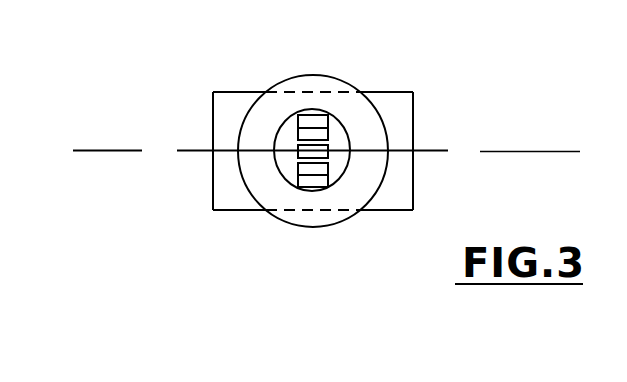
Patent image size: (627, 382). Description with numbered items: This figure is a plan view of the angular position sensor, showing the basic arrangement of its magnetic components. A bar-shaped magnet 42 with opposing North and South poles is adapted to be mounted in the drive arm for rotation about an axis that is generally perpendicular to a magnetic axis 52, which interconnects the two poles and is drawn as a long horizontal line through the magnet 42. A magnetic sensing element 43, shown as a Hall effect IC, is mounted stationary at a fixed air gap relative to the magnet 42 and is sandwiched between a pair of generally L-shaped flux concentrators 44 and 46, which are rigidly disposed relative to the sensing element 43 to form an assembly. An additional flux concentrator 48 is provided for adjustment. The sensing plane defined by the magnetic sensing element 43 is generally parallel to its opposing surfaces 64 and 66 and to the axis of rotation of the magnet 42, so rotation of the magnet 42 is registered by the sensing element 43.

The magnet 42 is at (403, 107).
The additional flux concentrator 48 is at (332, 80).
The L-shaped flux concentrator 46 is at (318, 178).
The L-shaped flux concentrator 44 is at (300, 118).
The magnetic sensing element 43 is at (328, 149).
The opposing surface 64 is at (328, 143).
The opposing surface 66 is at (328, 155).
The magnetic axis 52 is at (102, 150).